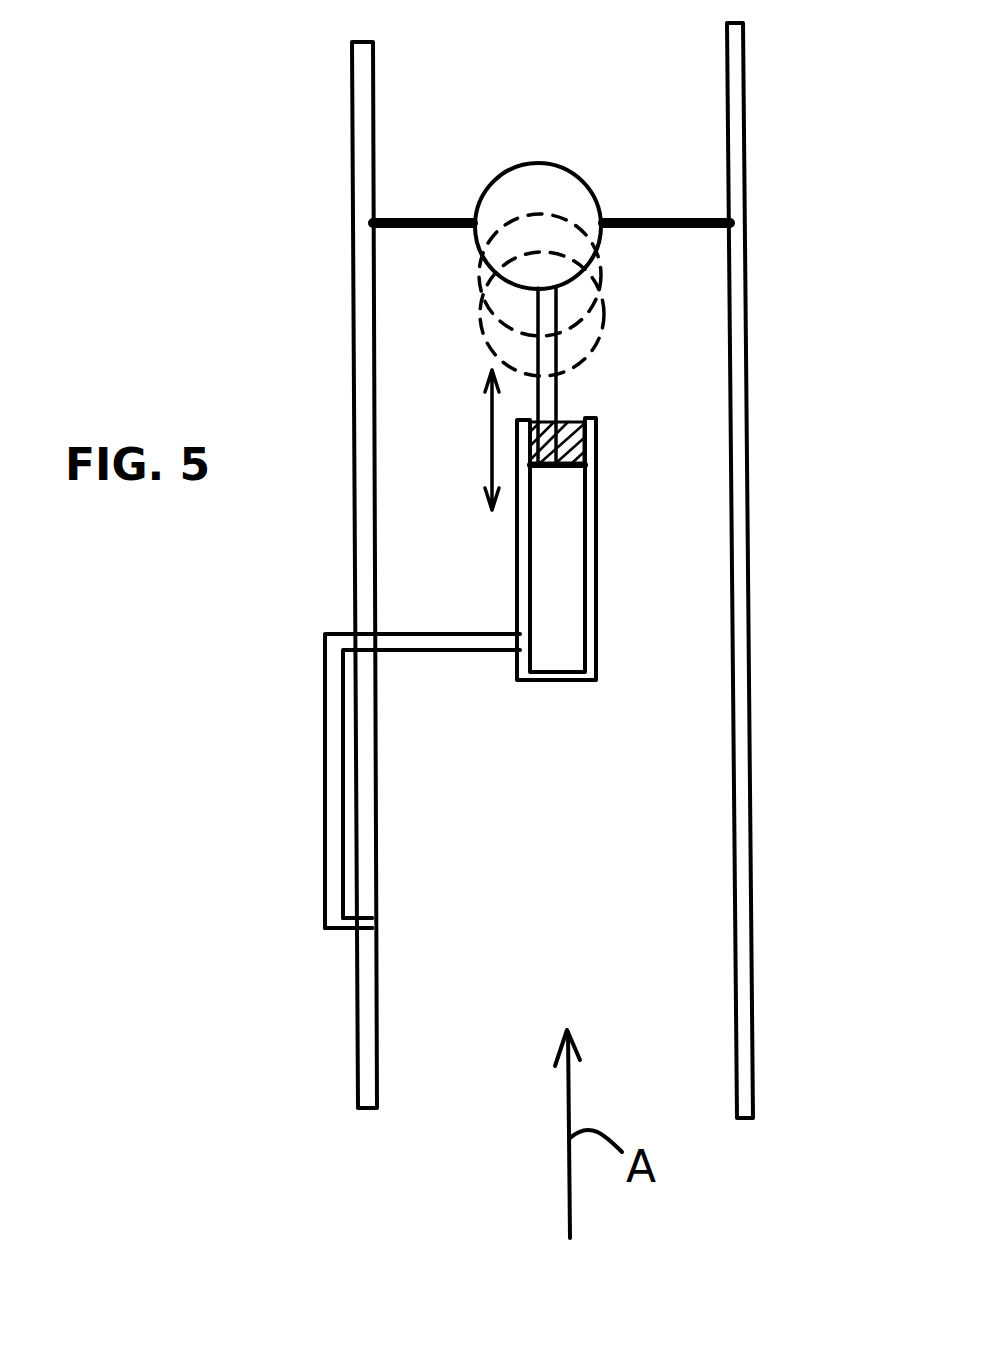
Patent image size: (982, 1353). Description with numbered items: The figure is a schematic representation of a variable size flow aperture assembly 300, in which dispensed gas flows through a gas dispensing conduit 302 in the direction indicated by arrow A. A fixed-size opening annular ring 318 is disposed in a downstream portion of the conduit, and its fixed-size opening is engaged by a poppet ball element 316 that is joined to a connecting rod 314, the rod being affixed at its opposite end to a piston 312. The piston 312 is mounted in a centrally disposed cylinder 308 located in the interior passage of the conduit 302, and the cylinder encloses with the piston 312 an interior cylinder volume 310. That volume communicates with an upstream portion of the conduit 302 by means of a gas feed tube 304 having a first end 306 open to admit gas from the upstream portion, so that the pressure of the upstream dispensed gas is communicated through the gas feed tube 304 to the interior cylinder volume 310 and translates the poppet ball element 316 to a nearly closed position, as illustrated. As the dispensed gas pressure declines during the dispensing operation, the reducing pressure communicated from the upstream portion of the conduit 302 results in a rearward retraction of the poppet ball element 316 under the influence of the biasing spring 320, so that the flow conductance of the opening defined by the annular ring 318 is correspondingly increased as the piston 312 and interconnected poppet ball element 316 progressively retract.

The variable size flow aperture assembly 300 is at (196, 745).
The gas dispensing conduit 302 is at (355, 1033).
The gas feed tube 304 is at (322, 848).
The first end 306 is at (380, 920).
The cylinder 308 is at (597, 585).
The interior cylinder volume 310 is at (557, 550).
The piston 312 is at (548, 477).
The connecting rod 314 is at (560, 405).
The poppet ball element 316 is at (567, 197).
The fixed-size opening annular ring 318 is at (662, 233).
The biasing spring 320 is at (588, 427).